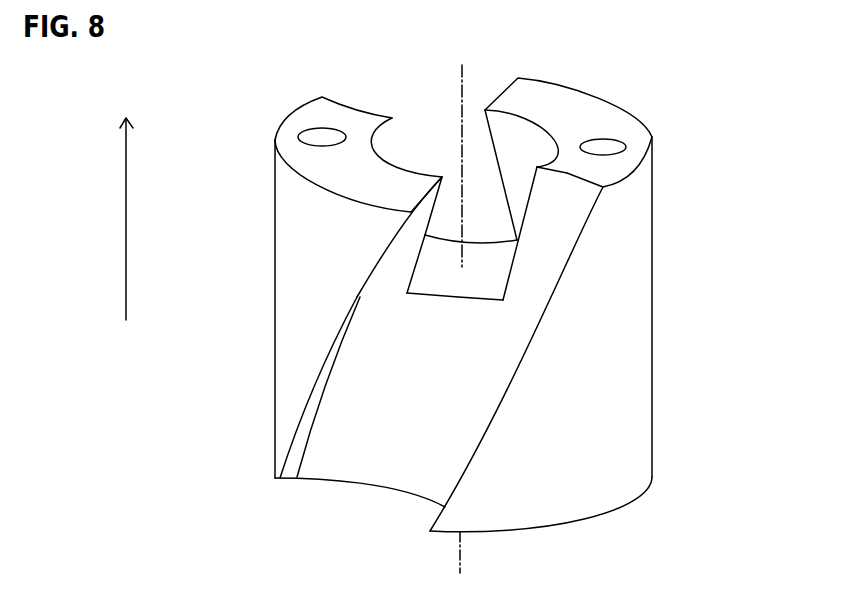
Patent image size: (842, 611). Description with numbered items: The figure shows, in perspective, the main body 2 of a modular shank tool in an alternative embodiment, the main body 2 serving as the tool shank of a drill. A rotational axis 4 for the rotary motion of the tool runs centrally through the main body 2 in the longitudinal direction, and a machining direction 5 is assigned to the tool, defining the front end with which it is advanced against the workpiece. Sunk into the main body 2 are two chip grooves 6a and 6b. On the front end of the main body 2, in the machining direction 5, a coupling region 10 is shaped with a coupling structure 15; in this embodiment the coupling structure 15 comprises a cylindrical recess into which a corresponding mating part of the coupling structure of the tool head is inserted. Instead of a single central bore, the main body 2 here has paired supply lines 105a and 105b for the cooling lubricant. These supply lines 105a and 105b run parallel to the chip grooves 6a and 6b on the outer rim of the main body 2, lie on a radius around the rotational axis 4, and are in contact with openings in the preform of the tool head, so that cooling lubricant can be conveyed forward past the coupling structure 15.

The main body 2 is at (705, 148).
The rotational axis 4 is at (460, 545).
The machining direction 5 is at (125, 207).
The chip groove 6a is at (360, 457).
The chip groove 6b is at (496, 100).
The coupling region 10 is at (448, 105).
The coupling structure 15 is at (388, 147).
The supply line 105a is at (320, 137).
The supply line 105b is at (603, 147).